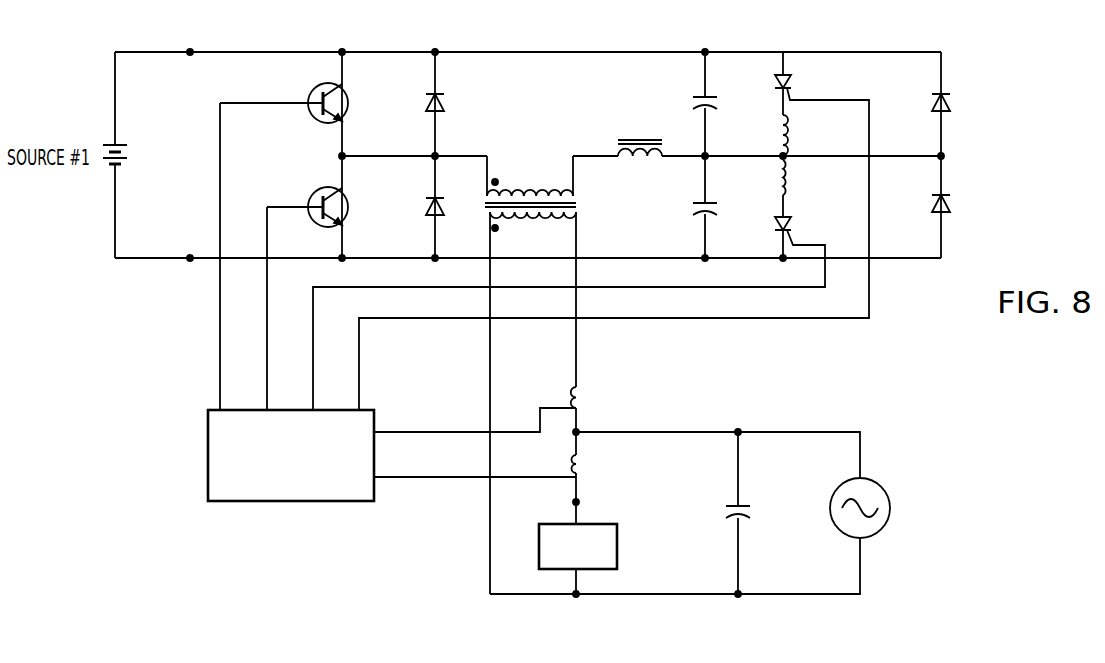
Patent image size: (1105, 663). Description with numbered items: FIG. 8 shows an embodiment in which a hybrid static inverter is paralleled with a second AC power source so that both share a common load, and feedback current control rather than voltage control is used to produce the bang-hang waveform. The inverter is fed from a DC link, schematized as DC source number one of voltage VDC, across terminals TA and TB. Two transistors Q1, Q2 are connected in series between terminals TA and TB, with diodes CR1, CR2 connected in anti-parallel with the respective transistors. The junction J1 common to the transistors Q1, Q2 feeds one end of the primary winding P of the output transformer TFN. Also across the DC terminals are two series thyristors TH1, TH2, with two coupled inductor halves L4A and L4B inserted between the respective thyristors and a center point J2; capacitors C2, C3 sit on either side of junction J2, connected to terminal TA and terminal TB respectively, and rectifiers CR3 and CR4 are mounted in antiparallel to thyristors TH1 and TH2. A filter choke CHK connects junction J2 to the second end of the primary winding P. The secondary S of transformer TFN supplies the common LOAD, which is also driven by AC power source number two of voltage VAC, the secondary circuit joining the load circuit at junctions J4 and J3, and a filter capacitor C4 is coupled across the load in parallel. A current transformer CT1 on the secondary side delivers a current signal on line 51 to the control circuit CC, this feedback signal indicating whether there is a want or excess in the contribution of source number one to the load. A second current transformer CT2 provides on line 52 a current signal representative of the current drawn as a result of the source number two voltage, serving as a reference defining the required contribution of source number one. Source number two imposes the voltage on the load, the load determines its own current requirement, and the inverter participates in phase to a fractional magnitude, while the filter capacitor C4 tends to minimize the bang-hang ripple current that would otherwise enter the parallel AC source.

The DC link terminal TA is at (190, 50).
The DC link terminal TB is at (190, 260).
The DC link voltage VDC is at (133, 153).
The transistor Q1 is at (312, 90).
The transistor Q2 is at (312, 194).
The junction J1 is at (340, 156).
The center point junction J2 is at (704, 156).
The junction J3 is at (578, 596).
The junction J4 is at (580, 502).
The diode CR1 is at (440, 99).
The diode CR2 is at (430, 199).
The rectifier CR3 is at (931, 100).
The rectifier CR4 is at (931, 202).
The output transformer TFN is at (559, 373).
The primary winding P is at (524, 190).
The secondary winding S is at (532, 219).
The filter choke CHK is at (647, 157).
The capacitor C2 is at (692, 98).
The capacitor C3 is at (692, 206).
The filter capacitor C4 is at (727, 507).
The coupled inductor half L4A is at (780, 131).
The coupled inductor half L4B is at (780, 180).
The thyristor TH1 is at (791, 88).
The thyristor TH2 is at (792, 226).
The control circuit CC is at (208, 426).
The line 51 is at (426, 433).
The line 52 is at (426, 478).
The current transformer CT1 is at (586, 398).
The current transformer CT2 is at (586, 469).
The common load LOAD is at (578, 546).
The AC source voltage VAC is at (828, 511).